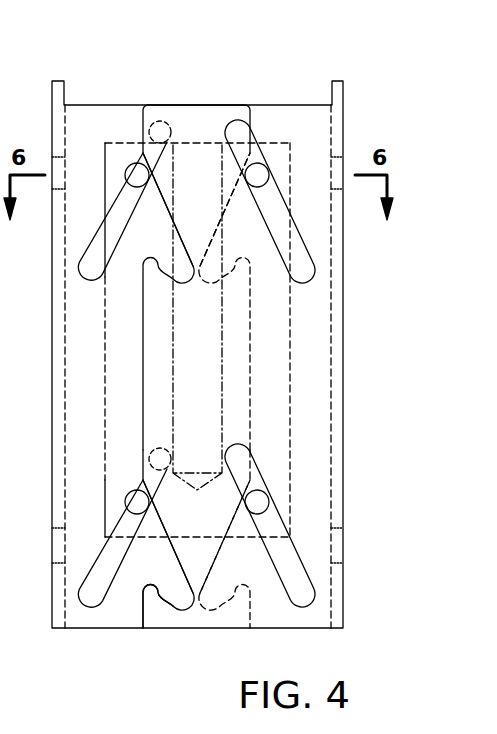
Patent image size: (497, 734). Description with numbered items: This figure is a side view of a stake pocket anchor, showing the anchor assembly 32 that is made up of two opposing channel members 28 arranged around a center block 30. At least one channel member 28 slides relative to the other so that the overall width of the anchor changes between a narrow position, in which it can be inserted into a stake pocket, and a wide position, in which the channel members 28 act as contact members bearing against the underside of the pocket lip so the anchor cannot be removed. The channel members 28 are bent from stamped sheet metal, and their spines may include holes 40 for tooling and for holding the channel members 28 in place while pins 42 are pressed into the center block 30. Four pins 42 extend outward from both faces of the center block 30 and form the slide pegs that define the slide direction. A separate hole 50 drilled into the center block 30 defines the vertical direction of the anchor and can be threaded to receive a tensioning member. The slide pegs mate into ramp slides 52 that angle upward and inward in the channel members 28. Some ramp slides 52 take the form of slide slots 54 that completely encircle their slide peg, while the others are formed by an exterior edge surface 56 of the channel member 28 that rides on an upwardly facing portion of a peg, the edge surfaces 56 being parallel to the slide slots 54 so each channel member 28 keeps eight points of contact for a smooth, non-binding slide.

The channel member 28 is at (315, 320).
The center block 30 is at (290, 388).
The anchor assembly 32 is at (418, 104).
The holes 40 is at (345, 163).
The pins 42 is at (141, 176).
The hole 50 is at (176, 178).
The ramp slides 52 is at (280, 186).
The slide slots 54 is at (100, 270).
The exterior edge surface 56 is at (163, 605).